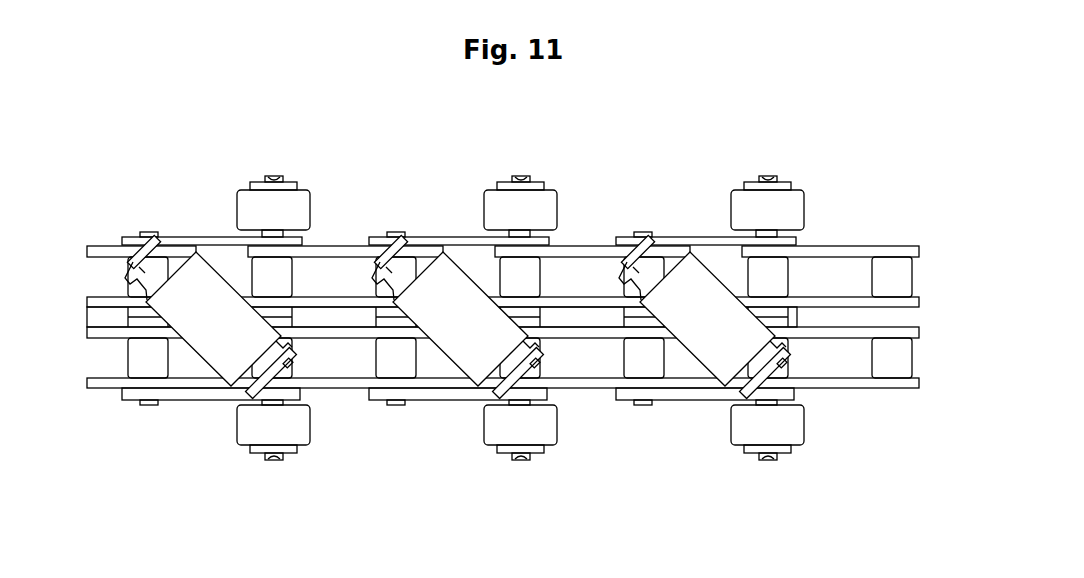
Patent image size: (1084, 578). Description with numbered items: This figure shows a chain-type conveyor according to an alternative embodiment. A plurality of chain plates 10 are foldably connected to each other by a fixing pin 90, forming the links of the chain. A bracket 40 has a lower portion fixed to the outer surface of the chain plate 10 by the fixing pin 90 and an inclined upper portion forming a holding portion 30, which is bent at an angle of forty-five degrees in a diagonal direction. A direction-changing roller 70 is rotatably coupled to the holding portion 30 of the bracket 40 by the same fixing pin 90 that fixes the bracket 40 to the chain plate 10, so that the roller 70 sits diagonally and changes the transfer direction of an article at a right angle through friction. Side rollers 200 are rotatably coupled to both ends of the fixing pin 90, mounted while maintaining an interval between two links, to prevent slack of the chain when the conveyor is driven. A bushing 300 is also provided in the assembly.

The chain plate 10 is at (316, 248).
The holding portion 30 is at (237, 407).
The bracket 40 is at (182, 414).
The direction-changing roller 70 is at (203, 340).
The fixing pin 90 is at (288, 381).
The side roller 200 is at (300, 210).
The bushing 300 is at (175, 242).